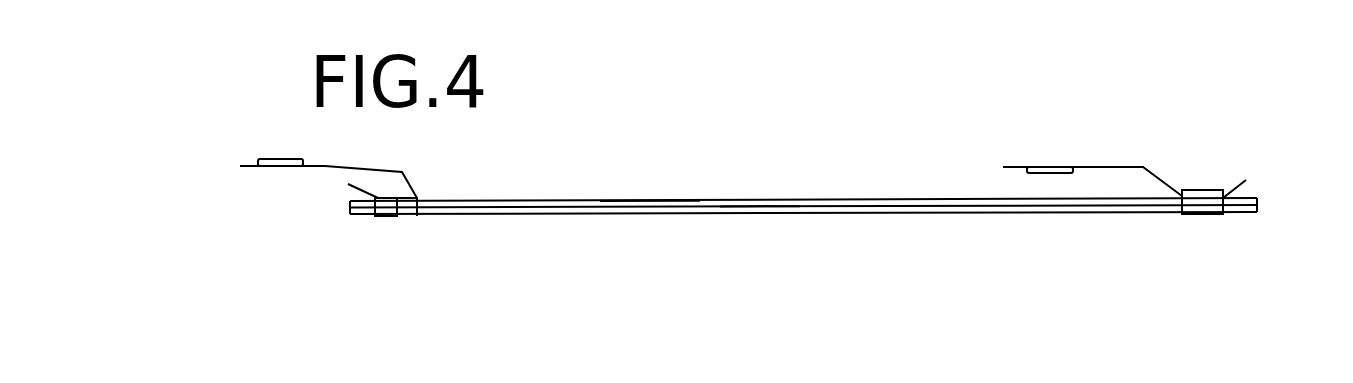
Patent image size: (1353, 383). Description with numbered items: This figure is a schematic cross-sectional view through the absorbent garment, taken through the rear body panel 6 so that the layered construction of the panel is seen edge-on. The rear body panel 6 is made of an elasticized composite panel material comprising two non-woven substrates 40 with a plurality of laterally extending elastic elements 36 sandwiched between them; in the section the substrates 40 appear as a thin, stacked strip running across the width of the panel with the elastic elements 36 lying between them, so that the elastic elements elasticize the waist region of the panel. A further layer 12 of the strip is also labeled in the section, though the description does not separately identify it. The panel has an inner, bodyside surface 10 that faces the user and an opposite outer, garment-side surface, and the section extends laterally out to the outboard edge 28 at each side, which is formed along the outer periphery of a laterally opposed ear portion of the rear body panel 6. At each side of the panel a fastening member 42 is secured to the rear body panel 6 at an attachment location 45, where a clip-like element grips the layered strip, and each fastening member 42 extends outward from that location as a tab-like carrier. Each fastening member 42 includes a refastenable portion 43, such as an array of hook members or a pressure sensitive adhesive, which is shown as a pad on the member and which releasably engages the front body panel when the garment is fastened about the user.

The rear body panel 6 is at (553, 215).
The inner, bodyside surface 10 is at (483, 200).
The conductive layer 12 is at (470, 215).
The outboard edge 28 is at (349, 214).
The laterally extending elastic elements 36 is at (752, 208).
The non-woven substrates 40 is at (623, 201).
The fastening members 42 is at (326, 167).
The refastenable portion 43 is at (283, 159).
The attachment location 45 is at (396, 216).